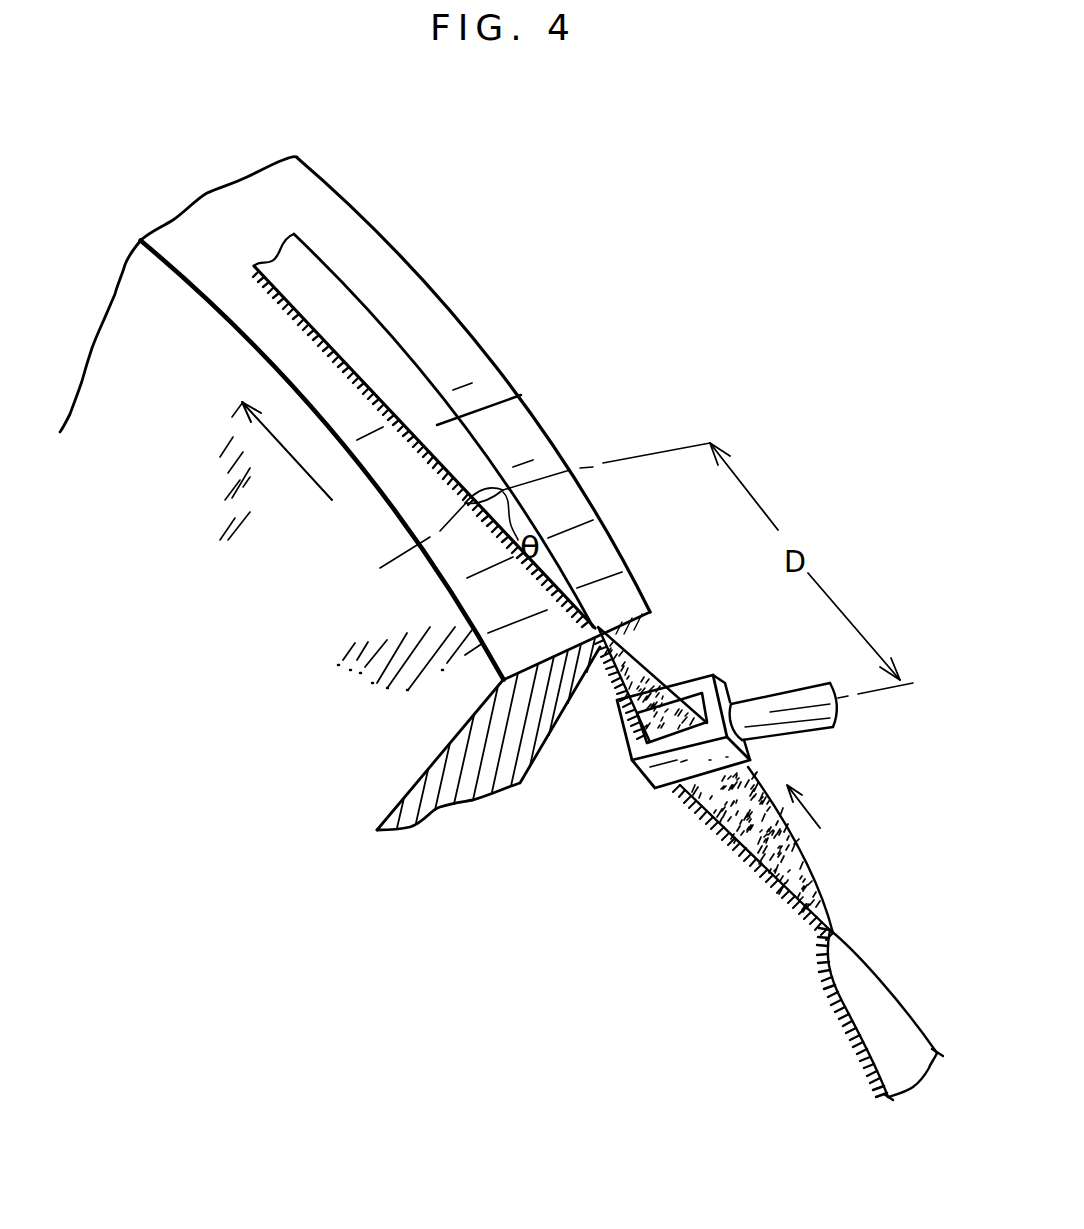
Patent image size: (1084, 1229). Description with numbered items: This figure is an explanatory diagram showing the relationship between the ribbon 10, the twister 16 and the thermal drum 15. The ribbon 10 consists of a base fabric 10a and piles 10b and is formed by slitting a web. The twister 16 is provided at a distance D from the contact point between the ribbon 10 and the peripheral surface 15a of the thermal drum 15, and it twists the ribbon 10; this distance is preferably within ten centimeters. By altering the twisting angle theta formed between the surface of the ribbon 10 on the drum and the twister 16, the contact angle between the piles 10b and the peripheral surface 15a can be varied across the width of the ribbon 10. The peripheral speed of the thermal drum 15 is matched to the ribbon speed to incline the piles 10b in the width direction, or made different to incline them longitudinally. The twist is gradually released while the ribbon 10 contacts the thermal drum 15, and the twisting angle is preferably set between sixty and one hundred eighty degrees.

The thermal drum 15 is at (328, 165).
The peripheral surface of the thermal drum 15a is at (412, 494).
The ribbon 10 is at (397, 305).
The base fabric 10a is at (520, 389).
The piles 10b is at (327, 347).
The twister 16 is at (668, 808).